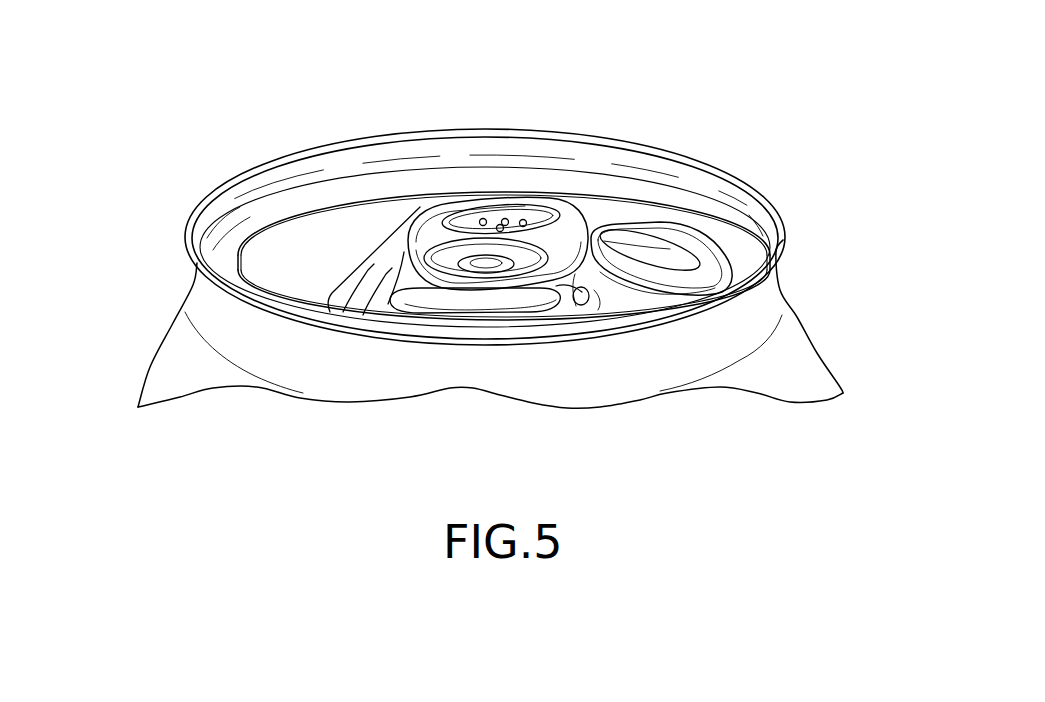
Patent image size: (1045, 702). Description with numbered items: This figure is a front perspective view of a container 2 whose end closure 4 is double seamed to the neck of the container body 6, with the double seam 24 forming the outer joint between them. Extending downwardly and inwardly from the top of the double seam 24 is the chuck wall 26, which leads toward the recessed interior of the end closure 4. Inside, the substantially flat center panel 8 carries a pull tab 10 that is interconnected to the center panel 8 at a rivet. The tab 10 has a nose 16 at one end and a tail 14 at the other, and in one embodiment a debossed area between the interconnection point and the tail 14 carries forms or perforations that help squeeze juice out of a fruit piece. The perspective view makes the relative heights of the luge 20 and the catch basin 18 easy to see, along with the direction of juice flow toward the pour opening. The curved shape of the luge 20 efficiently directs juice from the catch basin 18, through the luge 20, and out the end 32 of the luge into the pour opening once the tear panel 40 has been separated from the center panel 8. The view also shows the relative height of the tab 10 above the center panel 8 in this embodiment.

The container 2 is at (660, 113).
The end closure 4 is at (230, 170).
The container body 6 is at (793, 355).
The center panel 8 is at (295, 260).
The pull tab 10 is at (431, 228).
The tail 14 is at (510, 205).
The nose 16 is at (473, 290).
The catch basin 18 is at (640, 245).
The luge 20 is at (615, 273).
The double seam 24 is at (212, 268).
The chuck wall 26 is at (318, 168).
The end of the luge 32 is at (583, 283).
The tear panel 40 is at (562, 307).